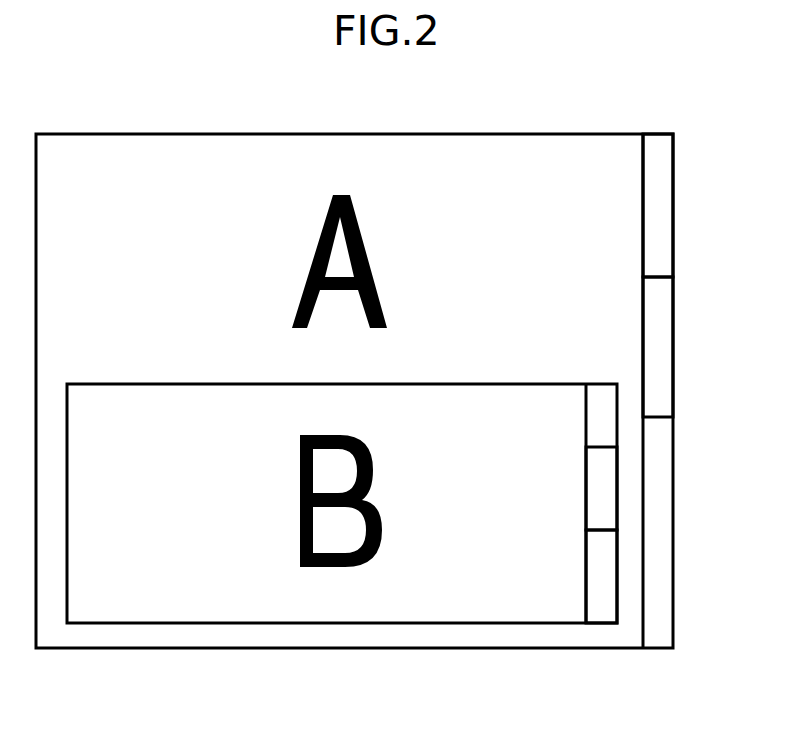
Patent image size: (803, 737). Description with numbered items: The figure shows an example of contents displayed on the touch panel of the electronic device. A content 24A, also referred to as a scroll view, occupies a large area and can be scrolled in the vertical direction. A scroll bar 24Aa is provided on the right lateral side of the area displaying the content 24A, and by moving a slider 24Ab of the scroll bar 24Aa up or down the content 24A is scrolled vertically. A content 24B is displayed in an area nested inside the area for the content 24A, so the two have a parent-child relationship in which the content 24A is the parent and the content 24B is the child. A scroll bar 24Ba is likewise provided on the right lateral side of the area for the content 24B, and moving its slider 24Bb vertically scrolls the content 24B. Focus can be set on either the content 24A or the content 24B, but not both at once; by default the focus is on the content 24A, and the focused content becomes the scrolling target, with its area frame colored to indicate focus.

The content 24A is at (99, 154).
The scroll bar 24Aa is at (667, 217).
The slider 24Ab is at (667, 347).
The content 24B is at (97, 607).
The scroll bar 24Ba is at (603, 575).
The slider 24Bb is at (603, 488).